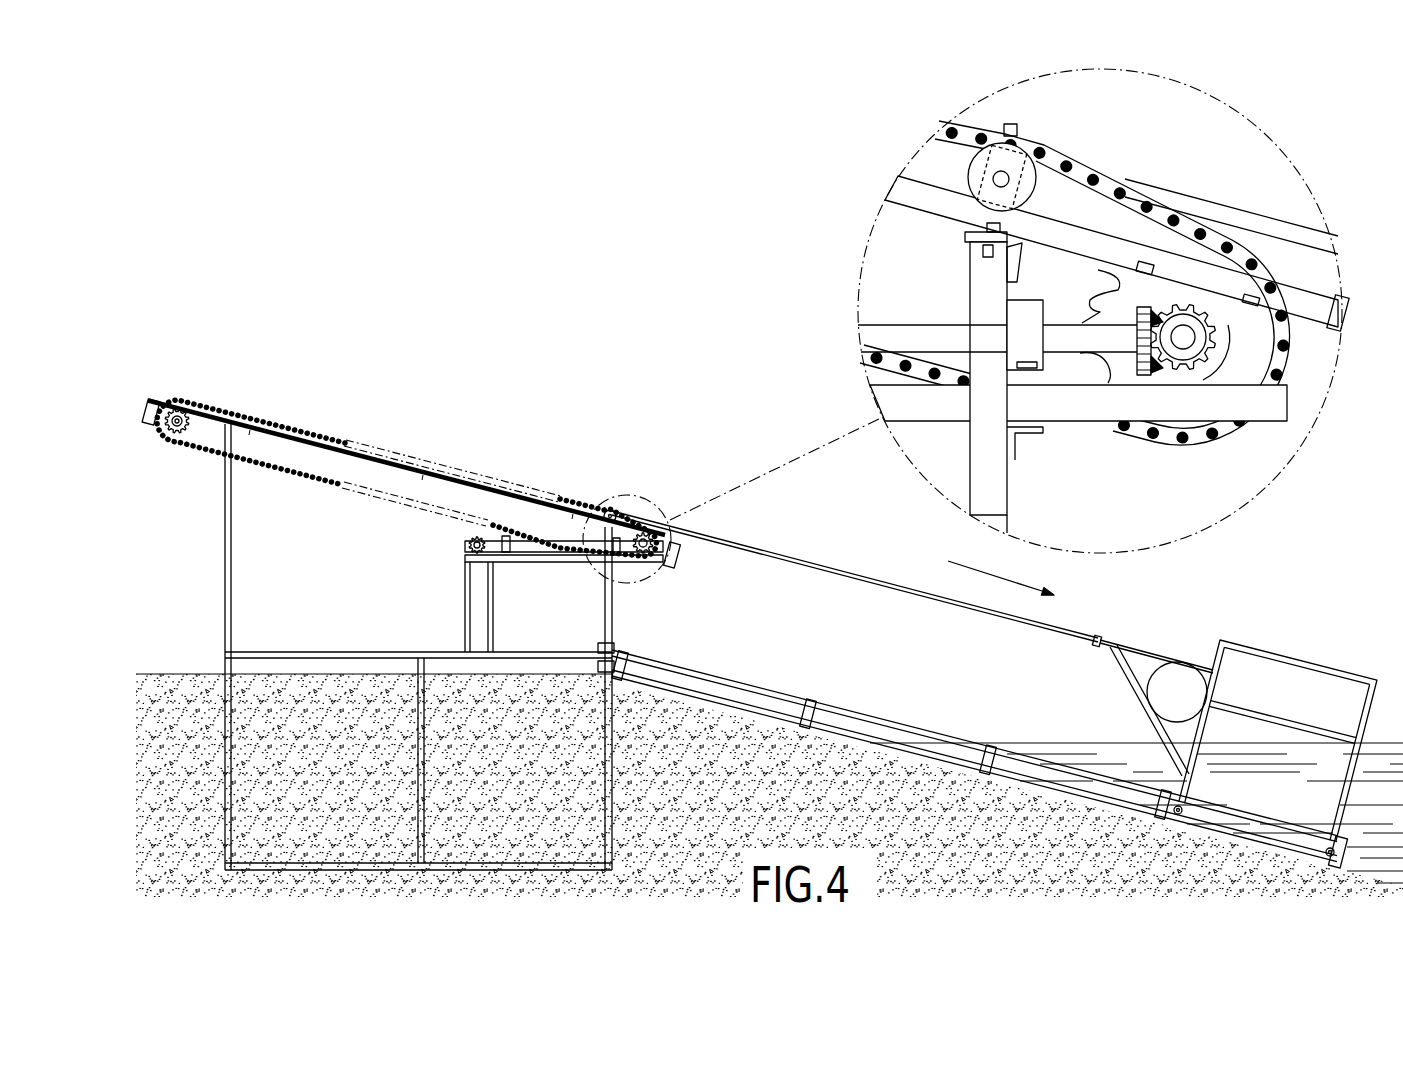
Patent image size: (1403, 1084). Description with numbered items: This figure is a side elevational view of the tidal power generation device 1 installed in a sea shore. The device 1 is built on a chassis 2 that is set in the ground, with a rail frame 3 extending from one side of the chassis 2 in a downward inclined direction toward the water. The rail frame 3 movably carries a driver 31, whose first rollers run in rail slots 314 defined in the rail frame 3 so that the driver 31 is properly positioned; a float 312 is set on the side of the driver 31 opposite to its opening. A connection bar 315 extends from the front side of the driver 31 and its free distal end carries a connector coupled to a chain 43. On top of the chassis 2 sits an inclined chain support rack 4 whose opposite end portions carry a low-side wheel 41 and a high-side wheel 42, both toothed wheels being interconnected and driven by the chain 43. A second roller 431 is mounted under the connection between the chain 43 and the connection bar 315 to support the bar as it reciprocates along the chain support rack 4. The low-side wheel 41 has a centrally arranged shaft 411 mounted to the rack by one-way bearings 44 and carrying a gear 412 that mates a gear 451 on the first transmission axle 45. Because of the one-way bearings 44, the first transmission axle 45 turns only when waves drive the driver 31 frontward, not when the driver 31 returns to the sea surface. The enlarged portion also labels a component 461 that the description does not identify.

The tidal power generation device 1 is at (564, 358).
The chassis 2 is at (226, 630).
The rail frame 3 is at (842, 710).
The driver 31 is at (1297, 676).
The float 312 is at (1175, 676).
The rail slots 314 is at (718, 682).
The connection bar 315 is at (870, 588).
The chain support rack 4 is at (462, 481).
The low-side wheel 41 is at (1243, 360).
The shaft 411 is at (1193, 342).
The gear 412 is at (1163, 368).
The high-side wheel 42 is at (172, 432).
The chain 43 is at (313, 432).
The second roller 431 is at (975, 174).
The one-way bearings 44 is at (1185, 357).
The first transmission axle 45 is at (883, 338).
The gear 451 is at (1140, 347).
The motor sprocket 461 is at (465, 552).